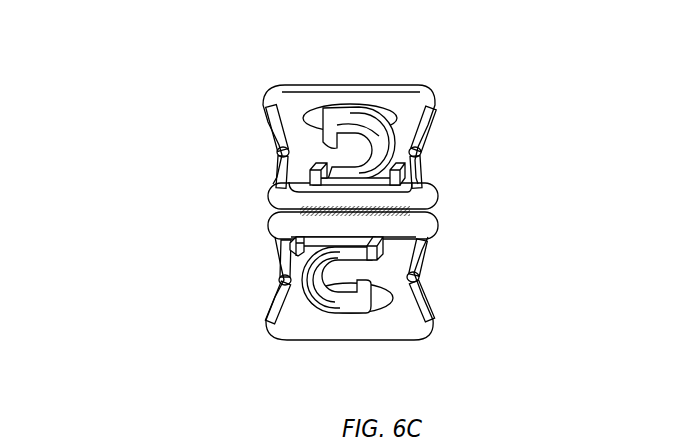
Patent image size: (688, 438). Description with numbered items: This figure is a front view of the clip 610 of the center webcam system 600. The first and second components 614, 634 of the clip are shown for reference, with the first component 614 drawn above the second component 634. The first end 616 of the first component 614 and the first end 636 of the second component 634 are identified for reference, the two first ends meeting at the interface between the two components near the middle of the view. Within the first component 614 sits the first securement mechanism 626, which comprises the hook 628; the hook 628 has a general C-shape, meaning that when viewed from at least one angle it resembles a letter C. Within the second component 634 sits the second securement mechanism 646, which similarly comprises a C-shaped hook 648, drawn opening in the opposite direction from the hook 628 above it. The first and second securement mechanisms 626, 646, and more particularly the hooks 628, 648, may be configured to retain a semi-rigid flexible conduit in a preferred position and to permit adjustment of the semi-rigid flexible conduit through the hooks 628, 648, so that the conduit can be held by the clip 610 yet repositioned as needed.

The center webcam system 600 is at (167, 103).
The clip 610 is at (148, 170).
The first component 614 is at (279, 86).
The first end of the first component 616 is at (282, 213).
The first securement mechanism 626 is at (310, 166).
The hook 628 is at (405, 152).
The second component 634 is at (378, 342).
The first end of the second component 636 is at (420, 213).
The second securement mechanism 646 is at (384, 253).
The C-shaped hook 648 is at (280, 281).